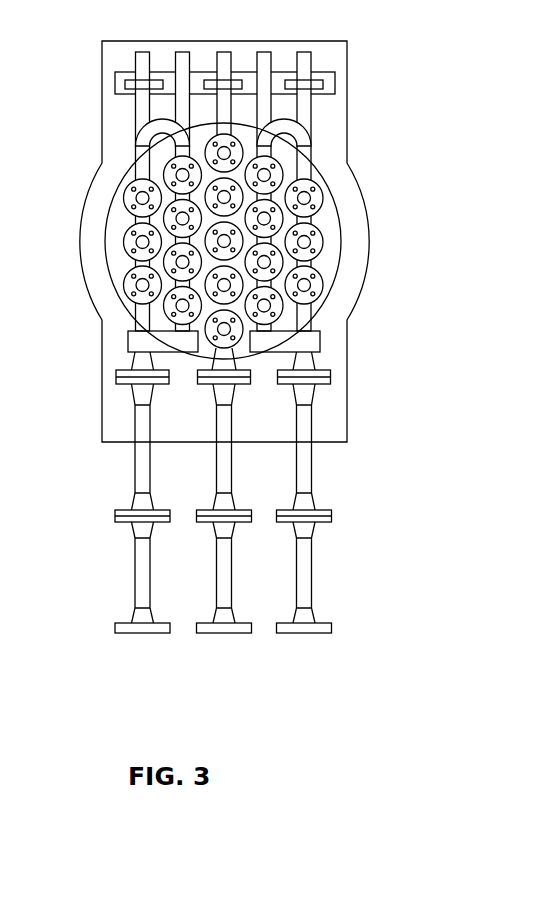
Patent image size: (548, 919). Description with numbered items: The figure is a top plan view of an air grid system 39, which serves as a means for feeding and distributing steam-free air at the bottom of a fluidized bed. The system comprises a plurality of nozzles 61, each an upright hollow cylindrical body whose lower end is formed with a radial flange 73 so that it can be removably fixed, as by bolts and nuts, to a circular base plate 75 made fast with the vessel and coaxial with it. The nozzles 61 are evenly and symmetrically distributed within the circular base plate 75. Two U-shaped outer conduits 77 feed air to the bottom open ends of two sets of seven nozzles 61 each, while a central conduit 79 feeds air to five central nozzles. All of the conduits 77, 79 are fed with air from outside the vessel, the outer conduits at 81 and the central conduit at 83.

The air grid system 39 is at (400, 253).
The nozzle 61 is at (308, 287).
The radial flange 73 is at (320, 188).
The circular base plate 75 is at (327, 301).
The U-shaped outer conduit 77 is at (152, 138).
The central conduit 79 is at (223, 118).
The outer conduit feed 81 is at (152, 636).
The central conduit feed 83 is at (233, 634).